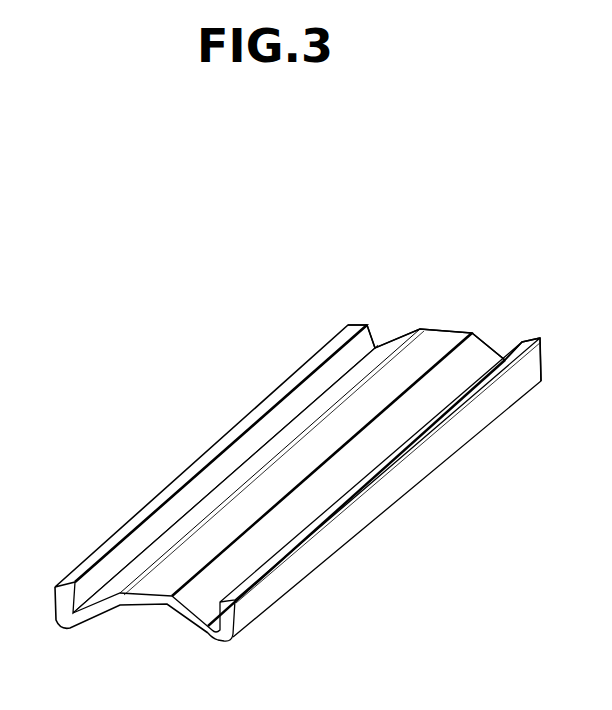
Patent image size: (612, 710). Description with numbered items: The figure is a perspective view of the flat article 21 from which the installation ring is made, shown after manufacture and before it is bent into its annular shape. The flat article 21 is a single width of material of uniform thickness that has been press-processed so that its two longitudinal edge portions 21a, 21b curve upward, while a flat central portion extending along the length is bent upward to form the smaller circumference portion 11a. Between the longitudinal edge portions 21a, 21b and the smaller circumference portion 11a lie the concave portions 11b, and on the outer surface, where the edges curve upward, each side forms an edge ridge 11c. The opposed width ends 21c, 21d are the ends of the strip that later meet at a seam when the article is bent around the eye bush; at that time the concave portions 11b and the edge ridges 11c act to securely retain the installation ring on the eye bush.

The flat article 21 is at (309, 481).
The longitudinal edge portion 21a is at (98, 553).
The longitudinal edge portion 21b is at (257, 580).
The width end 21c is at (97, 612).
The width end 21d is at (457, 333).
The smaller circumference portion 11a is at (158, 588).
The concave portion 11b is at (233, 467).
The edge ridge 11c is at (487, 417).